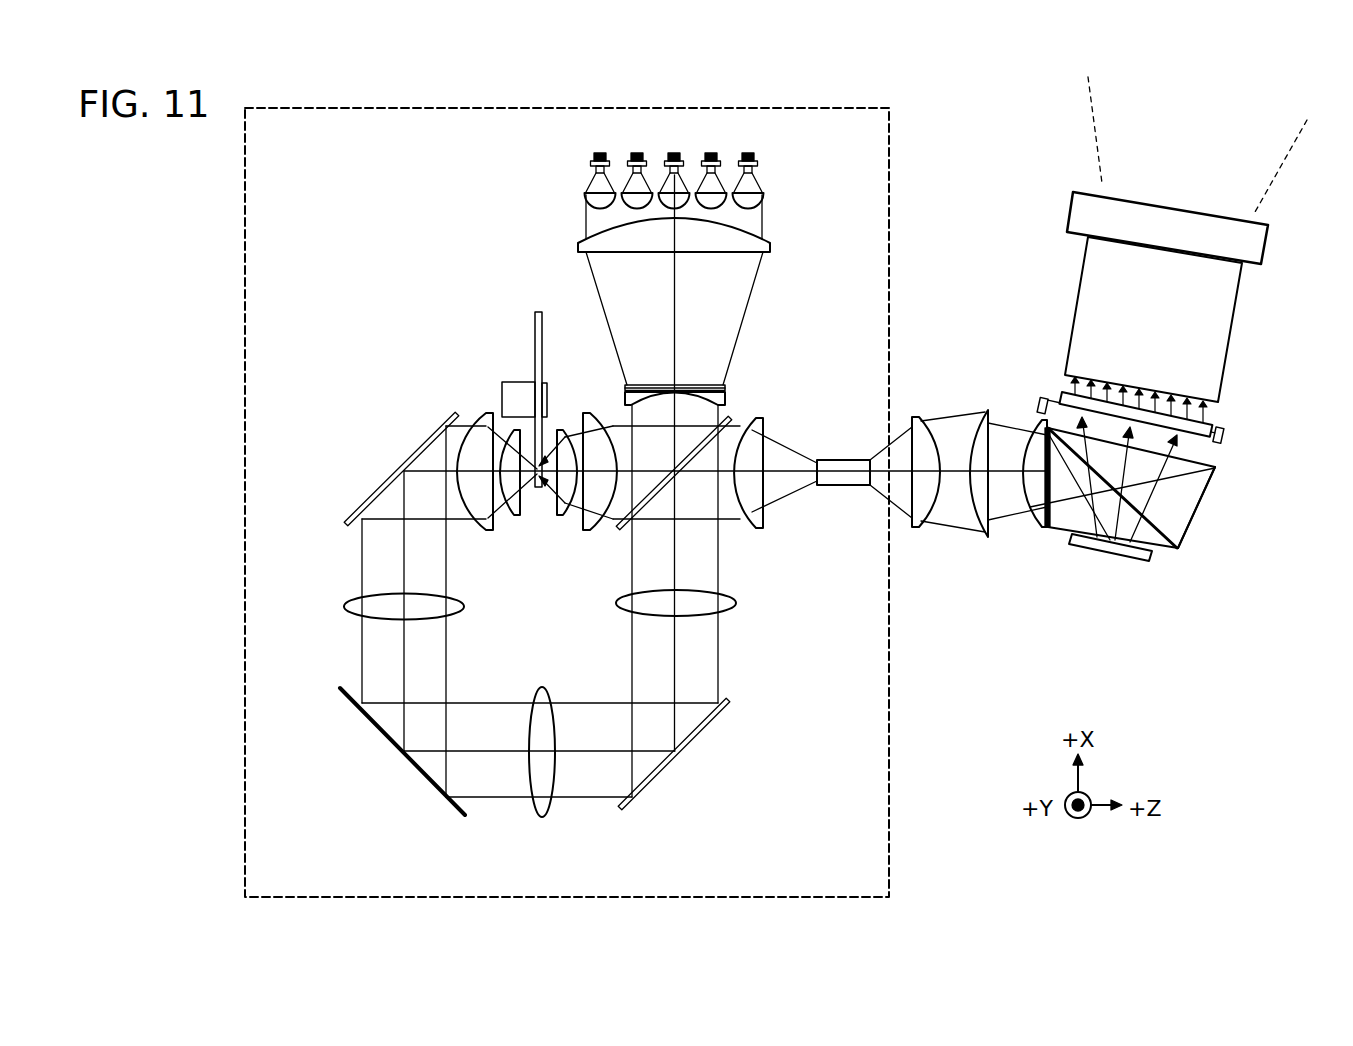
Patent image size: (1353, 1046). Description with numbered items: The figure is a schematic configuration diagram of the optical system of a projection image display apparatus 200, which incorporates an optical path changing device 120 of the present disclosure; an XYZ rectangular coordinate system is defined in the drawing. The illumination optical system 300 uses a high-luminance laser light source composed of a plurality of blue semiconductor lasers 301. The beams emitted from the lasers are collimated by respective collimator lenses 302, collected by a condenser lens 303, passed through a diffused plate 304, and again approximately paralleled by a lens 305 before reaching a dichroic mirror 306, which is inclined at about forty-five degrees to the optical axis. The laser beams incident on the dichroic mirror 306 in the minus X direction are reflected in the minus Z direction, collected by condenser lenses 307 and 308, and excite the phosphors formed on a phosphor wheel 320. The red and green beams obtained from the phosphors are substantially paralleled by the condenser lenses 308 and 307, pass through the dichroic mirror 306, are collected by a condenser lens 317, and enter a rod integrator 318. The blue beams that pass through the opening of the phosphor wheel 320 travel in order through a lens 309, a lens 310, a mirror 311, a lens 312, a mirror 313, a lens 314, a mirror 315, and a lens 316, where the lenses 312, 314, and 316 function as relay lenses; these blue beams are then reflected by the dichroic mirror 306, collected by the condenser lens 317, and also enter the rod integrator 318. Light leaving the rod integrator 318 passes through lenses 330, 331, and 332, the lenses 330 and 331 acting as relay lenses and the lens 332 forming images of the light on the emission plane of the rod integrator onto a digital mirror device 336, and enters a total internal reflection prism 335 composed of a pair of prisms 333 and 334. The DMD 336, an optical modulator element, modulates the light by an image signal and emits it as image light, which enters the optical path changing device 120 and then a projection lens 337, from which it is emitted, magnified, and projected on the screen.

The optical path changing device 120 is at (1212, 415).
The projection image display apparatus 200 is at (1197, 656).
The illumination optical system 300 is at (893, 178).
The blue semiconductor lasers 301 is at (760, 162).
The collimator lens 302 is at (763, 197).
The condenser lens 303 is at (770, 245).
The diffused plate 304 is at (728, 383).
The lens 305 is at (725, 397).
The dichroic mirror 306 is at (730, 420).
The condenser lens 307 is at (594, 513).
The condenser lens 308 is at (560, 508).
The lens 309 is at (514, 436).
The lens 310 is at (483, 418).
The mirror 311 is at (372, 493).
The lens 312 is at (350, 611).
The mirror 313 is at (382, 735).
The lens 314 is at (543, 820).
The mirror 315 is at (693, 740).
The lens 316 is at (735, 607).
The condenser lens 317 is at (752, 437).
The rod integrator 318 is at (845, 475).
The phosphor wheel 320 is at (534, 311).
The lens 330 is at (912, 417).
The lens 331 is at (978, 512).
The lens 332 is at (1038, 425).
The prism 333 is at (1197, 472).
The prism 334 is at (1145, 533).
The total internal reflection prism 335 is at (1205, 514).
The digital mirror device (DMD) 336 is at (1102, 543).
The projection lens 337 is at (1108, 320).